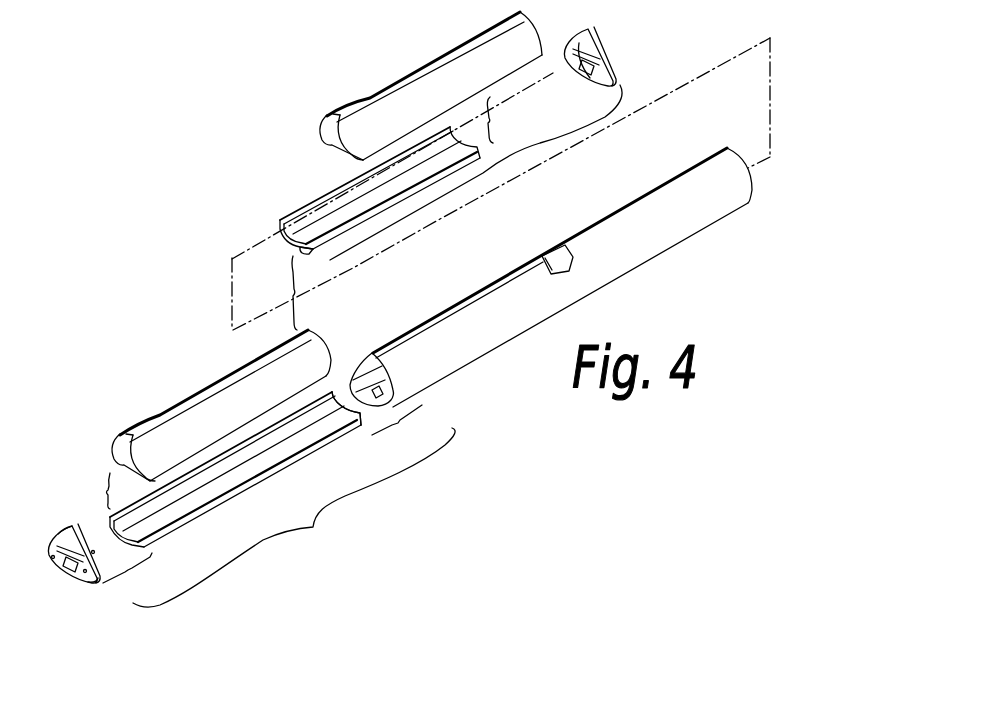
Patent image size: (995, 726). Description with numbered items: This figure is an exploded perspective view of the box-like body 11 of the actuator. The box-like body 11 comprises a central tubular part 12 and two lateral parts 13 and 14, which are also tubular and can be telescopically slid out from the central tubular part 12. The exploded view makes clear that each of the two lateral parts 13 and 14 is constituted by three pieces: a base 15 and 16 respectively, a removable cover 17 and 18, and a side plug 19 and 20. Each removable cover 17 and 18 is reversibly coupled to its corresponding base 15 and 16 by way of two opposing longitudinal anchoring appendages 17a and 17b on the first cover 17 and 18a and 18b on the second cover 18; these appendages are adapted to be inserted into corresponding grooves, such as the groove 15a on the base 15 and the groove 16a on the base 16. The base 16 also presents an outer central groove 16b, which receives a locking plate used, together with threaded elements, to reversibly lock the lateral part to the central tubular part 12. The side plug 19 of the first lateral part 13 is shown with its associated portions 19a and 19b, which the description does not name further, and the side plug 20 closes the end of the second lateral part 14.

The box-like body 11 is at (163, 250).
The central tubular part 12 is at (625, 261).
The first lateral part 13 is at (294, 517).
The second lateral part 14 is at (480, 176).
The base 15 is at (247, 462).
The groove 15a is at (355, 408).
The base 16 is at (347, 197).
The groove 16a is at (280, 220).
The outer central groove 16b is at (320, 257).
The cover 17 is at (237, 414).
The longitudinal anchoring appendage 17a is at (108, 467).
The longitudinal anchoring appendage 17b is at (147, 480).
The cover 18 is at (463, 87).
The longitudinal anchoring appendage 18a is at (316, 147).
The longitudinal anchoring appendage 18b is at (353, 153).
The side plug 19 is at (62, 565).
The end cap flange 19a is at (80, 585).
The end cap tab 19b is at (60, 535).
The side plug 20 is at (610, 58).